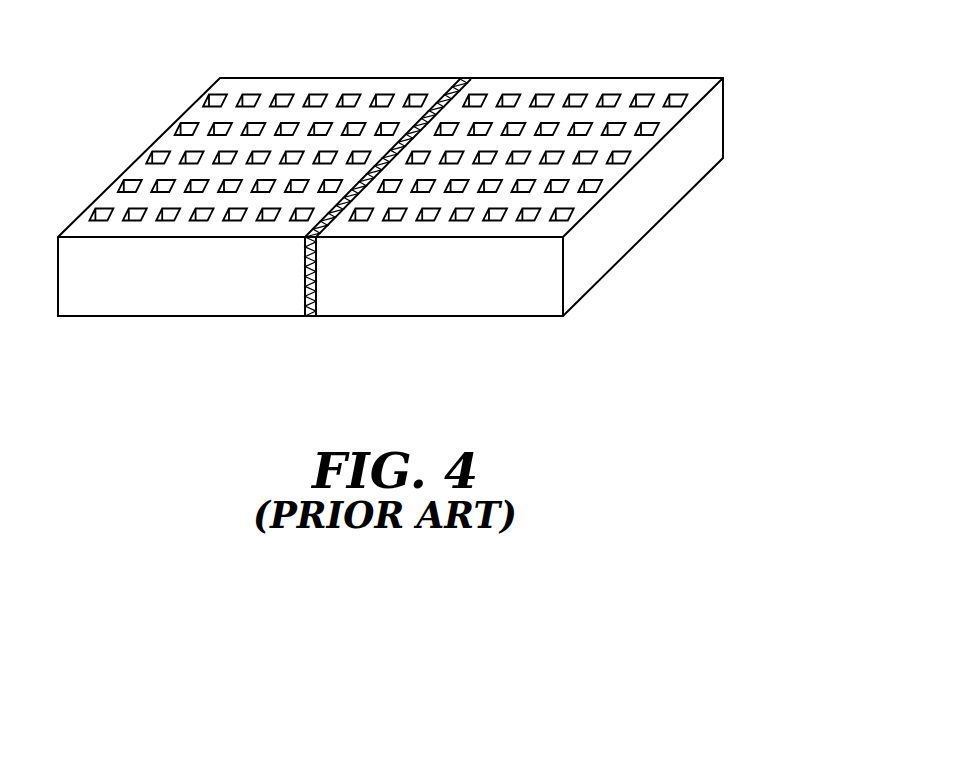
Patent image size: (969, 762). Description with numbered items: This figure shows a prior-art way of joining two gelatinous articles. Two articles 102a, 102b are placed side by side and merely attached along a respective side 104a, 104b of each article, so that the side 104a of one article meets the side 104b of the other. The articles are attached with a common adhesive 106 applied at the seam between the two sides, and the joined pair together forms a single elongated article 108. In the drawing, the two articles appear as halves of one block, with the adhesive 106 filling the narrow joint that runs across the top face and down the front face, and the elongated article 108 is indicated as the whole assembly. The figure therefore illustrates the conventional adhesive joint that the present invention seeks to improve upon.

The gelatinous article 102a is at (649, 80).
The gelatinous article 102b is at (309, 80).
The side 104a is at (318, 293).
The side 104b is at (303, 307).
The common adhesive 106 is at (471, 81).
The elongated article 108 is at (742, 227).